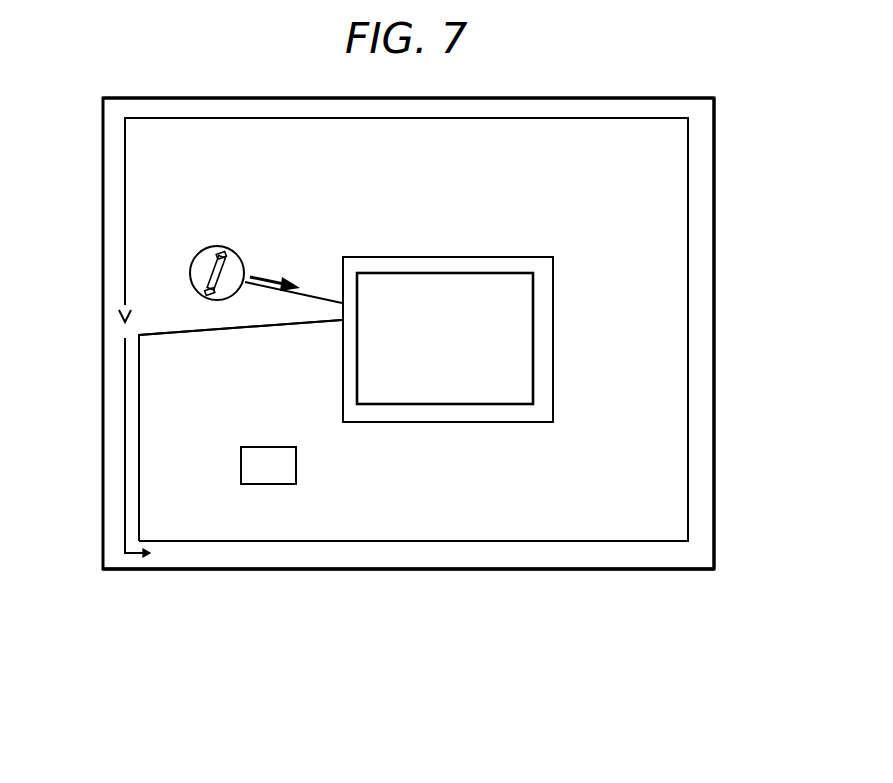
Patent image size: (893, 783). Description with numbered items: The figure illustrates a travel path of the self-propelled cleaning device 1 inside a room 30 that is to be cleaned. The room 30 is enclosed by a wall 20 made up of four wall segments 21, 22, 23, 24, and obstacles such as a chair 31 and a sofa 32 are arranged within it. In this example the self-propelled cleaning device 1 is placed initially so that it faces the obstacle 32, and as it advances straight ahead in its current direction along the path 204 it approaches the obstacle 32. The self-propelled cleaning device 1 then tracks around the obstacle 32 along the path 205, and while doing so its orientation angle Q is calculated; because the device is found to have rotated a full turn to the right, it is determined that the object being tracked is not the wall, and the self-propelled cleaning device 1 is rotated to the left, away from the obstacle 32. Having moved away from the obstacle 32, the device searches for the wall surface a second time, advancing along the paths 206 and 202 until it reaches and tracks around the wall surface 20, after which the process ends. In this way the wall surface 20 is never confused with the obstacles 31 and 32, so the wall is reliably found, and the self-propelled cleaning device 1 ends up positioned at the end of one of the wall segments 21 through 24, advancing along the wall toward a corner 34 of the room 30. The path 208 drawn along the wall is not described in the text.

The self-propelled cleaning device 1 is at (227, 247).
The orientation angle Q is at (272, 277).
The wall 20 is at (613, 569).
The wall segment 21 is at (102, 470).
The wall segment 22 is at (675, 571).
The wall segment 23 is at (716, 542).
The wall segment 24 is at (136, 98).
The room 30 is at (403, 600).
The chair 31 is at (283, 485).
The sofa 32 is at (458, 402).
The corner 34 is at (102, 572).
The path 202 is at (220, 543).
The path 204 is at (313, 293).
The path 205 is at (482, 255).
The path 206 is at (162, 331).
The flow path 208 is at (125, 437).